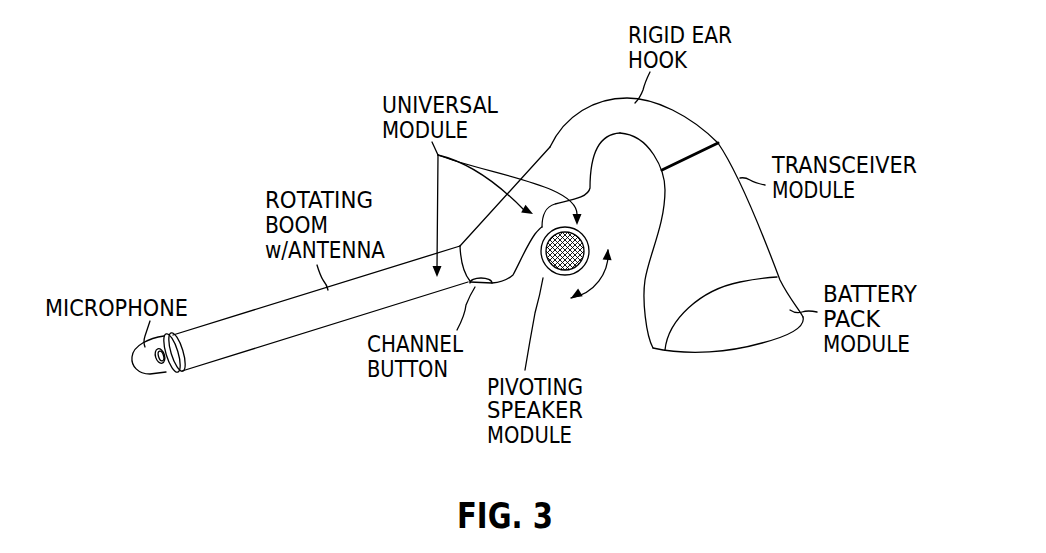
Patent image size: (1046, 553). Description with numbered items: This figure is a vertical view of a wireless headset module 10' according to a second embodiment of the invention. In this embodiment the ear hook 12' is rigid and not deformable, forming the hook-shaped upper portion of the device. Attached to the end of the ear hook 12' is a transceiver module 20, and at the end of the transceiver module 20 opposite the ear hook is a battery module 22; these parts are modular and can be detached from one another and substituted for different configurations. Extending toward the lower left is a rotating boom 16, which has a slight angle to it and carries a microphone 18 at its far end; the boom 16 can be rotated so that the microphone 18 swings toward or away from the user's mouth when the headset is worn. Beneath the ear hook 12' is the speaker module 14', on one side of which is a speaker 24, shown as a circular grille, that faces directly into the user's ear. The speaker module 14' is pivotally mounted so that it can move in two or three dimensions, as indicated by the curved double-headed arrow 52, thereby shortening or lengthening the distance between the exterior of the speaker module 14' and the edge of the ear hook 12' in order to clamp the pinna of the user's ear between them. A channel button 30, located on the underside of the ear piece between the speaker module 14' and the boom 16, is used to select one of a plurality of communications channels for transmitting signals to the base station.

The wireless headset module 10' is at (611, 83).
The ear hook 12' is at (591, 212).
The speaker module 14' is at (565, 295).
The rotating boom 16 is at (333, 327).
The microphone 18 is at (147, 376).
The transceiver module 20 is at (753, 253).
The battery module 22 is at (748, 335).
The speaker 24 is at (584, 236).
The channel button 30 is at (485, 288).
The pivot direction arrow 52 is at (600, 284).